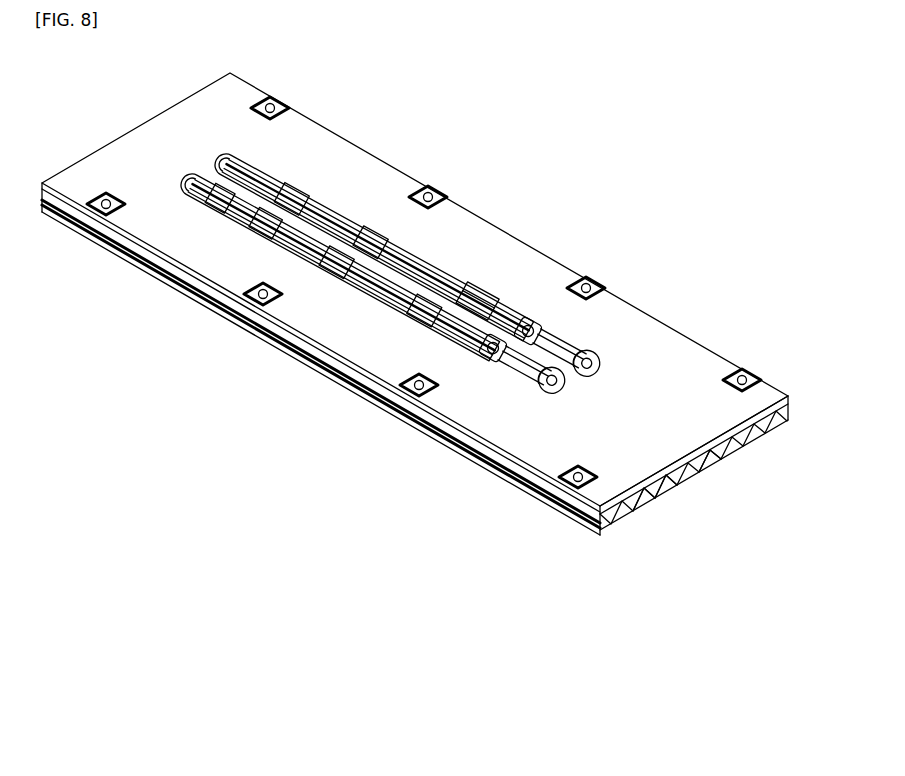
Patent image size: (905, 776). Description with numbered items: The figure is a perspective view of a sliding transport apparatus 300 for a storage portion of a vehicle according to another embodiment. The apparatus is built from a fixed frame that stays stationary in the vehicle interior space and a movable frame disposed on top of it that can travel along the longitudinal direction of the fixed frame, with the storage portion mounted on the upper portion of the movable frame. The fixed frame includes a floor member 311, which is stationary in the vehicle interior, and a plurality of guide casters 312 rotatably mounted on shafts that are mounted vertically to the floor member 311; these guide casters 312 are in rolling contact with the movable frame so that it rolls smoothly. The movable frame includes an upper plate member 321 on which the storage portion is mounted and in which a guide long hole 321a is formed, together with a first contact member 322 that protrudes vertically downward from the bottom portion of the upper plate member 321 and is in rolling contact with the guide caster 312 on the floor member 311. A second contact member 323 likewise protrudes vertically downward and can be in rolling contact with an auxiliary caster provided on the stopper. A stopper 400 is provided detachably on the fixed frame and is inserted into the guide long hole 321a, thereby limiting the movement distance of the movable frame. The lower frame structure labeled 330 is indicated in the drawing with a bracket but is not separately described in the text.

The sliding transport apparatus 300 is at (462, 142).
The floor member 311 is at (717, 462).
The guide caster 312 is at (472, 300).
The upper plate member 321 is at (622, 462).
The guide long hole 321a is at (328, 270).
The first contact member 322 is at (660, 488).
The second contact member 323 is at (703, 477).
The truss frame 330 is at (798, 528).
The stopper 400 is at (574, 331).